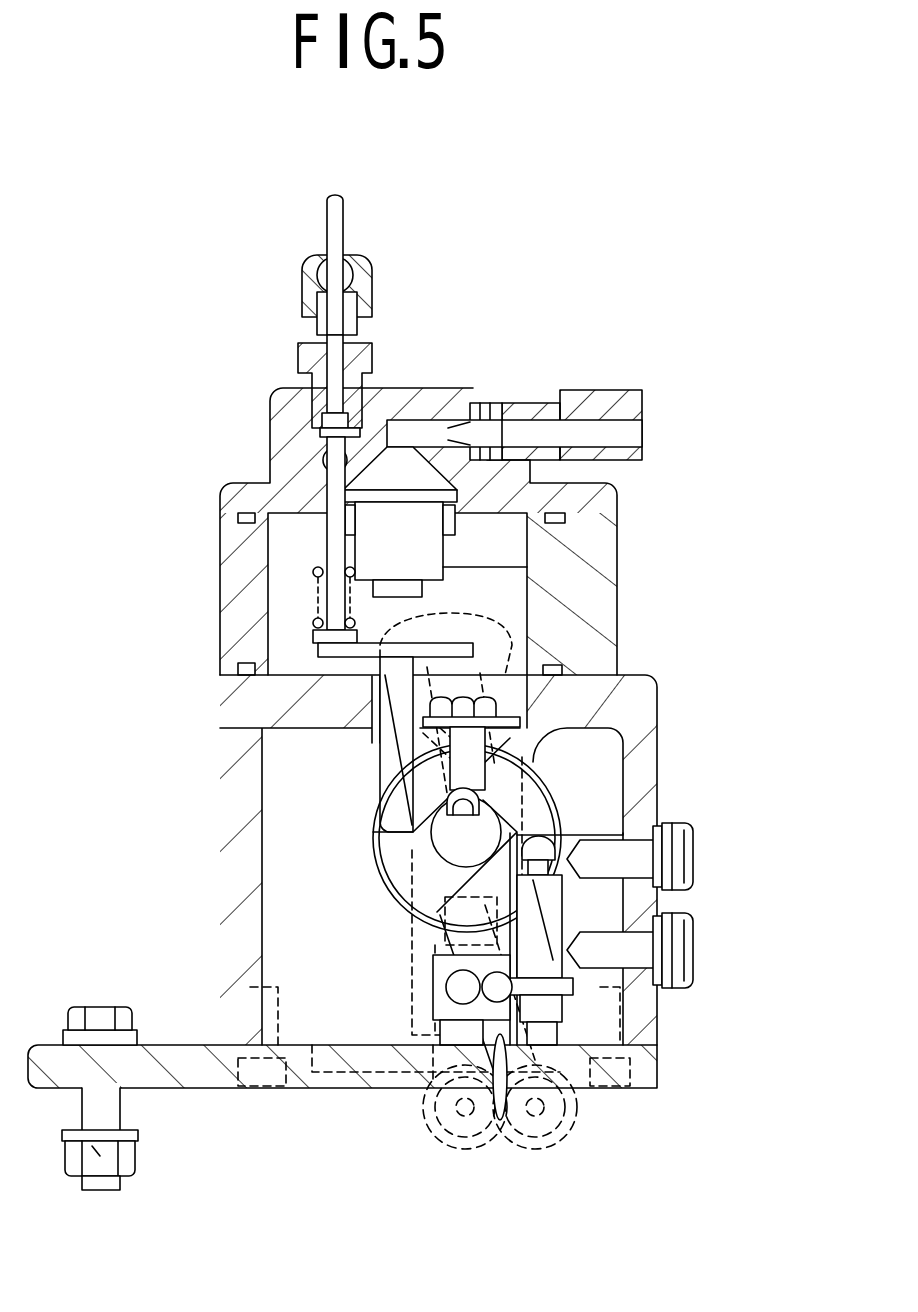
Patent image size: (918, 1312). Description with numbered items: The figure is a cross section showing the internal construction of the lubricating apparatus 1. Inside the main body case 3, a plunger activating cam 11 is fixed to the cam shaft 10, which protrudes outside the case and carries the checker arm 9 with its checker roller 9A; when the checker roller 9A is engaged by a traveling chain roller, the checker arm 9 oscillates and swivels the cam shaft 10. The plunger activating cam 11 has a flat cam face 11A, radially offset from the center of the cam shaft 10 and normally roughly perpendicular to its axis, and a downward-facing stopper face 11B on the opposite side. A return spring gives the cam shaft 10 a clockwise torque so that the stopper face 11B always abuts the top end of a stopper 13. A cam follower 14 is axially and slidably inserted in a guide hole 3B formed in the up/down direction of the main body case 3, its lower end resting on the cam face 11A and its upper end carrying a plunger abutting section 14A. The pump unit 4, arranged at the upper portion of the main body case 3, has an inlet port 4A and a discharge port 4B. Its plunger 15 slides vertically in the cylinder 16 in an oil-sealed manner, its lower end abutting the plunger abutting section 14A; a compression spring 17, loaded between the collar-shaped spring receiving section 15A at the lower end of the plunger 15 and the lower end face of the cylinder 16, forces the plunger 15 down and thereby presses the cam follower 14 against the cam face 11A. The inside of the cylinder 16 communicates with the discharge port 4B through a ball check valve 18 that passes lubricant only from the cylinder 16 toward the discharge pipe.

The lubricating apparatus 1 is at (704, 914).
The main body case 3 is at (640, 768).
The guide hole 3B is at (375, 712).
The pump unit 4 is at (593, 602).
The inlet port 4A is at (612, 397).
The discharge port 4B is at (357, 323).
The checker arm 9 is at (397, 978).
The checker roller 9A is at (440, 1125).
The cam shaft 10 is at (577, 727).
The plunger activating cam 11 is at (400, 887).
The cam face 11A is at (455, 822).
The stopper face 11B is at (548, 836).
The stopper 13 is at (590, 850).
The cam follower 14 is at (385, 793).
The plunger abutting section 14A is at (318, 650).
The plunger 15 is at (327, 550).
The spring receiving section 15A is at (312, 597).
The cylinder 16 is at (345, 496).
The compression spring 17 is at (350, 582).
The ball check valve 18 is at (330, 452).